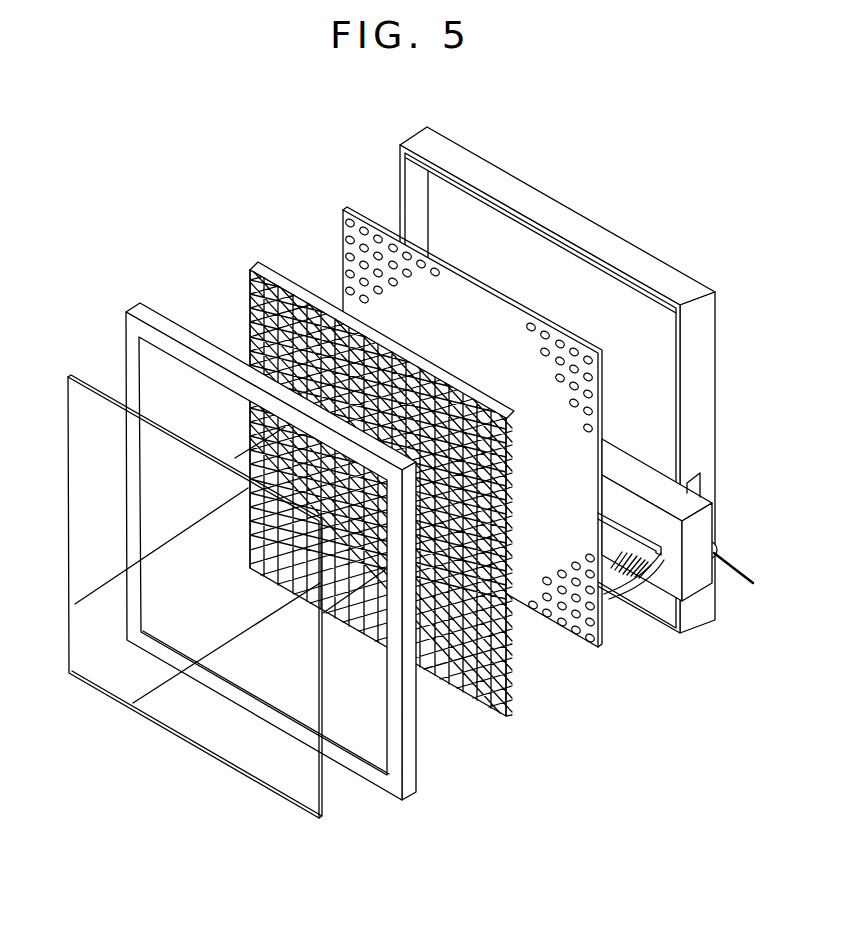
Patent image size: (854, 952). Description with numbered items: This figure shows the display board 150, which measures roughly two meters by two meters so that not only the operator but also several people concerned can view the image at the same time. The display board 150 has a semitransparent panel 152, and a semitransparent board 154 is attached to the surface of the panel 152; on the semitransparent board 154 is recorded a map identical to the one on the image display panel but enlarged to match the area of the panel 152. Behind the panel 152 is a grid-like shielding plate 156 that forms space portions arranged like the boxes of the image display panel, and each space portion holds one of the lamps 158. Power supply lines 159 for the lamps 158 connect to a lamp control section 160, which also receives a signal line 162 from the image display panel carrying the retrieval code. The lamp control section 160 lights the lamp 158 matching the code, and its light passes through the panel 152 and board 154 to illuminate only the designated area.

The display board 150 is at (140, 245).
The semitransparent panel 152 is at (152, 352).
The semitransparent board 154 is at (68, 398).
The grid-like shielding plate 156 is at (268, 268).
The lamps 158 is at (348, 224).
The power supply lines 159 is at (629, 578).
The lamp control section 160 is at (637, 470).
The signal line 162 is at (739, 572).